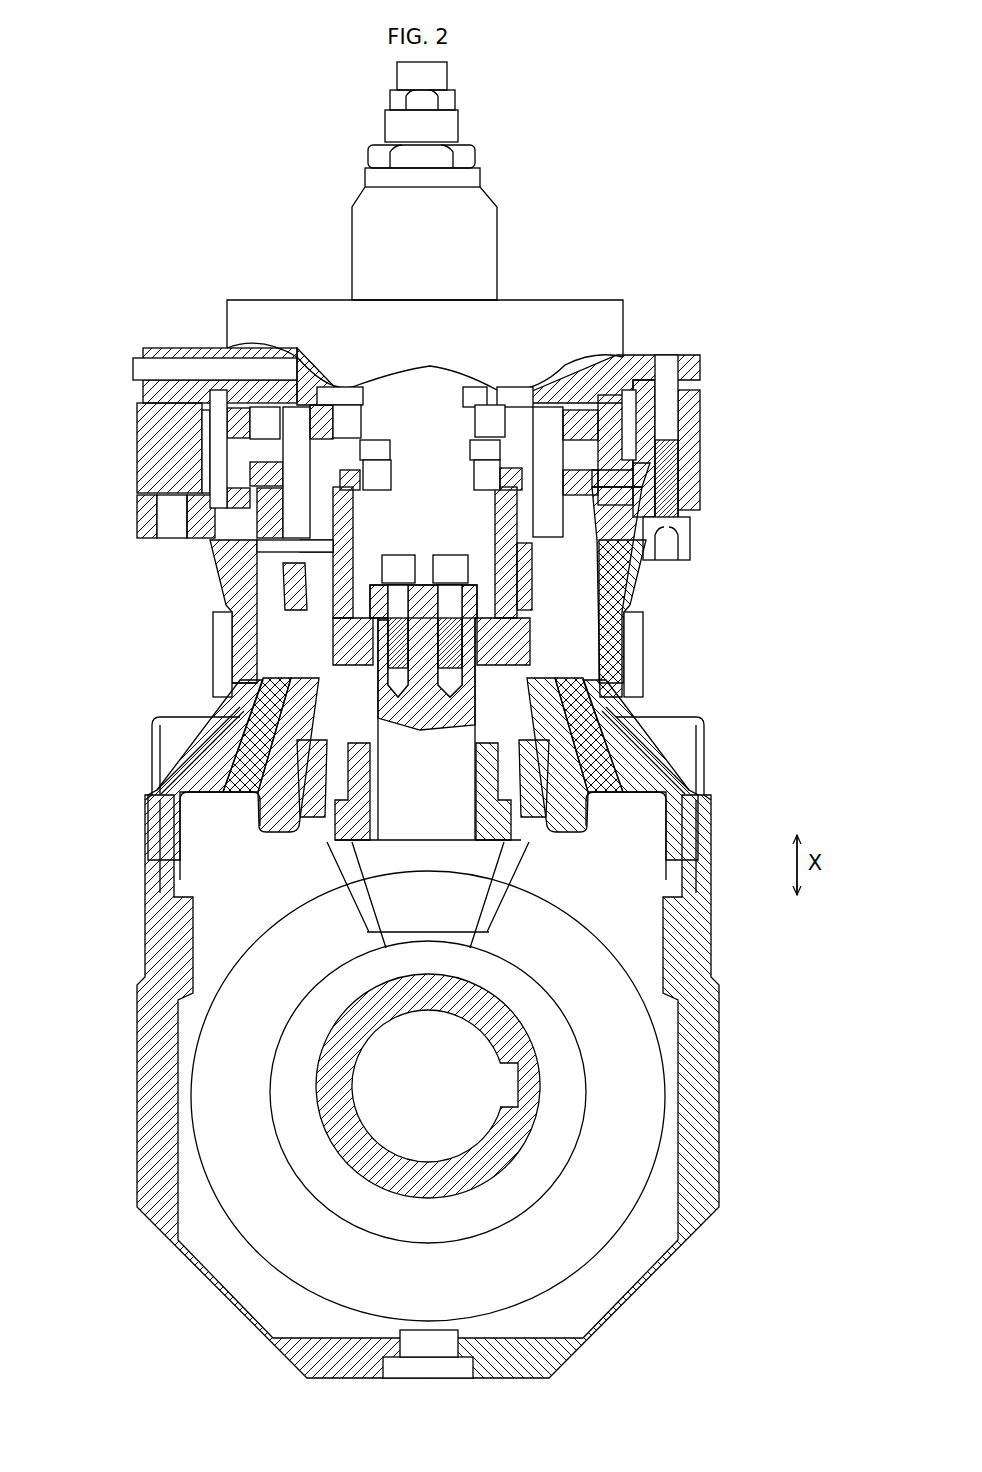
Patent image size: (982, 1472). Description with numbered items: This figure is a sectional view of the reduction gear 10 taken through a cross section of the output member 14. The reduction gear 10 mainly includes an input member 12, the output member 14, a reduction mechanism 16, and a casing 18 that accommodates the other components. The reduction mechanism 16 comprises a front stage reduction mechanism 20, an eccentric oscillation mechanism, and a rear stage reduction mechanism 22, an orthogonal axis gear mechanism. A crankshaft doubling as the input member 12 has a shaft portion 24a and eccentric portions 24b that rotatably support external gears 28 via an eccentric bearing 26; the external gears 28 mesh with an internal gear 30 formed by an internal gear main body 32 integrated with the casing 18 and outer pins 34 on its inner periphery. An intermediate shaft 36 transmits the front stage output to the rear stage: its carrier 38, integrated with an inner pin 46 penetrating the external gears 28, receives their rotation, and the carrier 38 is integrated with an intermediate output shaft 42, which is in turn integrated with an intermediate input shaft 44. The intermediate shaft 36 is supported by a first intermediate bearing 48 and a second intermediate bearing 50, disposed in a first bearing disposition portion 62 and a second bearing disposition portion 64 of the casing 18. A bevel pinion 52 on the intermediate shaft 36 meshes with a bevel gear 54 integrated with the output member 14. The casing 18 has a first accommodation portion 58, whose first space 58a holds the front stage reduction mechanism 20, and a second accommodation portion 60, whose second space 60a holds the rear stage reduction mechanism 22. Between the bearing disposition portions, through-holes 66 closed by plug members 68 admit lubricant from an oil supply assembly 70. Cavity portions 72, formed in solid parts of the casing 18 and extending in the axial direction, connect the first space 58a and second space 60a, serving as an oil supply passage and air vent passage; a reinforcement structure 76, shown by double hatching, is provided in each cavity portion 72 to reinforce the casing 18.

The reduction gear 10 is at (732, 1080).
The input member 12 is at (432, 350).
The output member 14 is at (421, 1007).
The reduction mechanism 16 is at (803, 724).
The casing 18 is at (150, 595).
The front stage reduction mechanism 20 is at (610, 560).
The rear stage reduction mechanism 22 is at (577, 882).
The shaft portion 24a is at (400, 464).
The eccentric portions 24b is at (380, 412).
The eccentric bearing 26 is at (487, 405).
The external gears 28 is at (265, 408).
The internal gear 30 is at (218, 390).
The internal gear main body 32 is at (150, 455).
The outer pin 34 is at (206, 426).
The intermediate shaft 36 is at (528, 632).
The carrier 38 is at (500, 535).
The intermediate output shaft 42 is at (538, 670).
The intermediate input shaft 44 is at (250, 740).
The inner pin 46 is at (306, 468).
The first intermediate bearing 48 is at (283, 570).
The second intermediate bearing 50 is at (306, 830).
The bevel pinion 52 is at (512, 856).
The bevel gear 54 is at (597, 940).
The first accommodation portion 58 is at (185, 541).
The first space 58a is at (315, 633).
The second accommodation portion 60 is at (185, 1280).
The second space 60a is at (215, 901).
The first bearing disposition portion 62 is at (262, 598).
The second bearing disposition portion 64 is at (272, 810).
The through-hole 66 is at (245, 676).
The plug member 68 is at (214, 634).
The oil supply assembly 70 is at (497, 180).
The cavity portion 72 is at (240, 718).
The reinforcement structure 76 is at (250, 798).